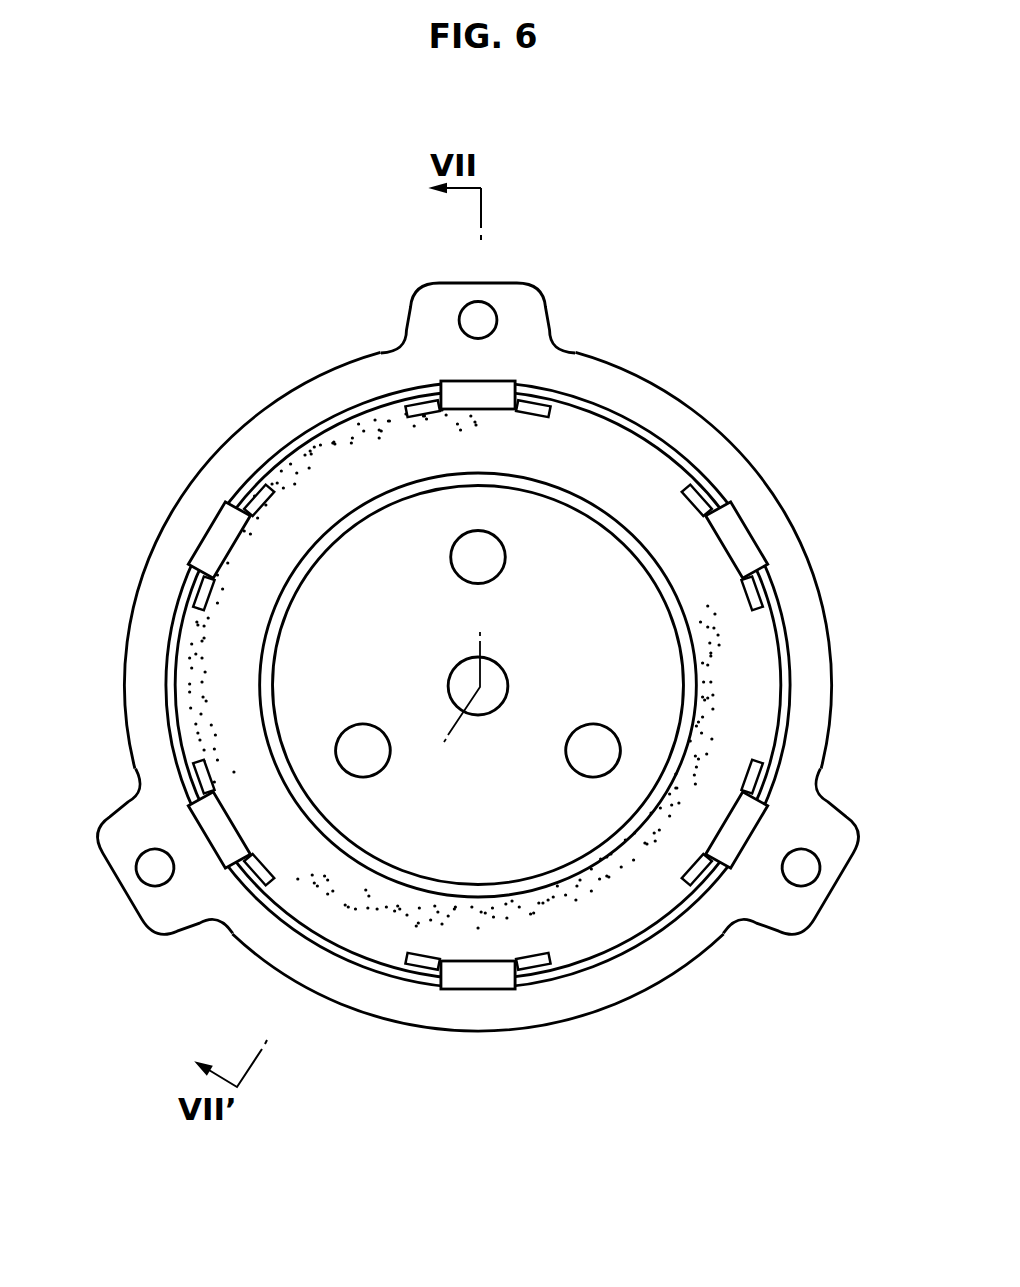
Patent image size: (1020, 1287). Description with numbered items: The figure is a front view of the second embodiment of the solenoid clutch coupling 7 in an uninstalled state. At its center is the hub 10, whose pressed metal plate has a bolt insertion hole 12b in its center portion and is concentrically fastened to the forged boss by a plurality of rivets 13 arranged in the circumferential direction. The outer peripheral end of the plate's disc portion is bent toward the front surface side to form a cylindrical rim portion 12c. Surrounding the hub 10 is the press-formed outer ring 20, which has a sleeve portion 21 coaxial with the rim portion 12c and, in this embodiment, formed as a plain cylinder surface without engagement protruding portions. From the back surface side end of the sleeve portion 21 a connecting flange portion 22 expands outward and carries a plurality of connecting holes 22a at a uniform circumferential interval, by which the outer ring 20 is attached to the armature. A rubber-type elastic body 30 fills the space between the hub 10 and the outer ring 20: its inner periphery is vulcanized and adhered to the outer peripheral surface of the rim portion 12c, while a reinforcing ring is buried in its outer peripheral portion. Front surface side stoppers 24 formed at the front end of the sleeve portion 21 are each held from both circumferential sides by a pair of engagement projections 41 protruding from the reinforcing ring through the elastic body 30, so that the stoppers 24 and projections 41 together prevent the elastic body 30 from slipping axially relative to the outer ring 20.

The coupling 7 is at (206, 384).
The hub 10 is at (603, 880).
The bolt insertion hole 12b is at (462, 673).
The rim portion 12c is at (641, 560).
The rivets 13 is at (494, 563).
The outer ring 20 is at (586, 392).
The sleeve portion 21 is at (786, 604).
The connecting flange portion 22 is at (662, 412).
The connecting holes 22a is at (486, 318).
The front surface side stoppers 24 is at (745, 540).
The elastic body 30 is at (673, 492).
The engagement projections 41 is at (697, 500).